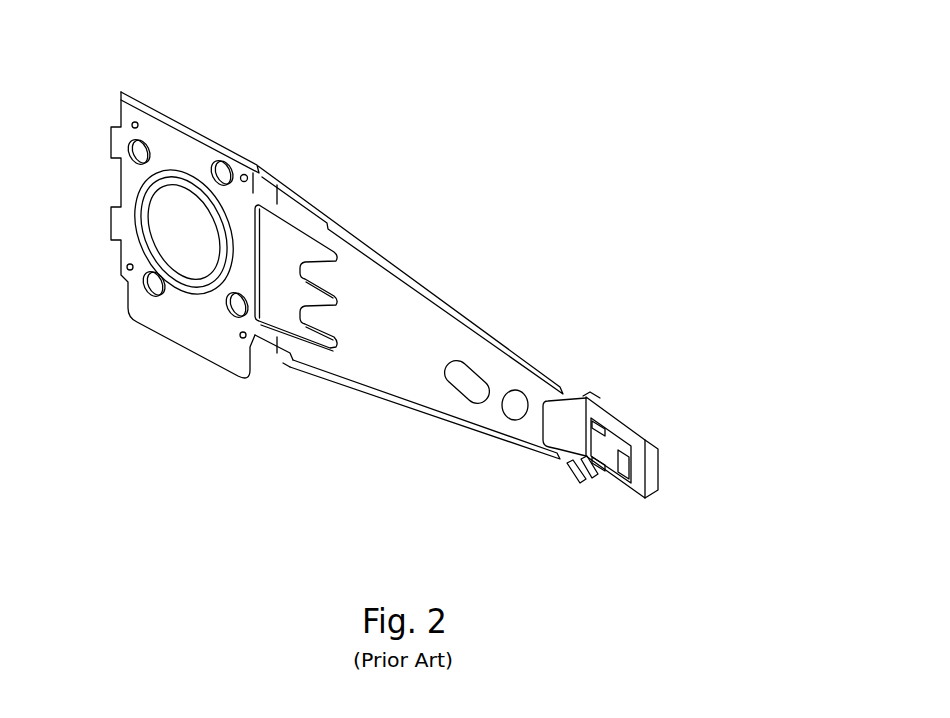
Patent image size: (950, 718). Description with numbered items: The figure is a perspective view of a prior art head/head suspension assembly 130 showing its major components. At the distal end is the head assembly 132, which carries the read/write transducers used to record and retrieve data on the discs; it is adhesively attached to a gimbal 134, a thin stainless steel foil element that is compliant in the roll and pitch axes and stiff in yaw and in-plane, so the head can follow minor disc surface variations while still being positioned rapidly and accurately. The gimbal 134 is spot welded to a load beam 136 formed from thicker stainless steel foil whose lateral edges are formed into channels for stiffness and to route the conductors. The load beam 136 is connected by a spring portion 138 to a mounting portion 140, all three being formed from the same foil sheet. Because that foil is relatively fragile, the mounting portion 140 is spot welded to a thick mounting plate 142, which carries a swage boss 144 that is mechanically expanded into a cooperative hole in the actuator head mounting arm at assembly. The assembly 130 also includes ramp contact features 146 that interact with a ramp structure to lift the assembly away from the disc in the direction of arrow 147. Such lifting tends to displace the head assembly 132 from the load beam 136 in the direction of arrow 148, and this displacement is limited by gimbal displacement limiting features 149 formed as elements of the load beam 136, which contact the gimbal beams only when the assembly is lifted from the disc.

The head/head suspension assembly 130 is at (427, 180).
The head assembly 132 is at (663, 463).
The gimbal 134 is at (577, 428).
The load beam 136 is at (397, 328).
The spring portion 138 is at (332, 200).
The mounting portion 140 is at (186, 311).
The mounting plate 142 is at (137, 100).
The swage boss 144 is at (180, 180).
The ramp contact features 146 is at (590, 490).
The arrow 147 is at (420, 420).
The arrow 148 is at (655, 415).
The gimbal displacement limiting features 149 is at (622, 420).